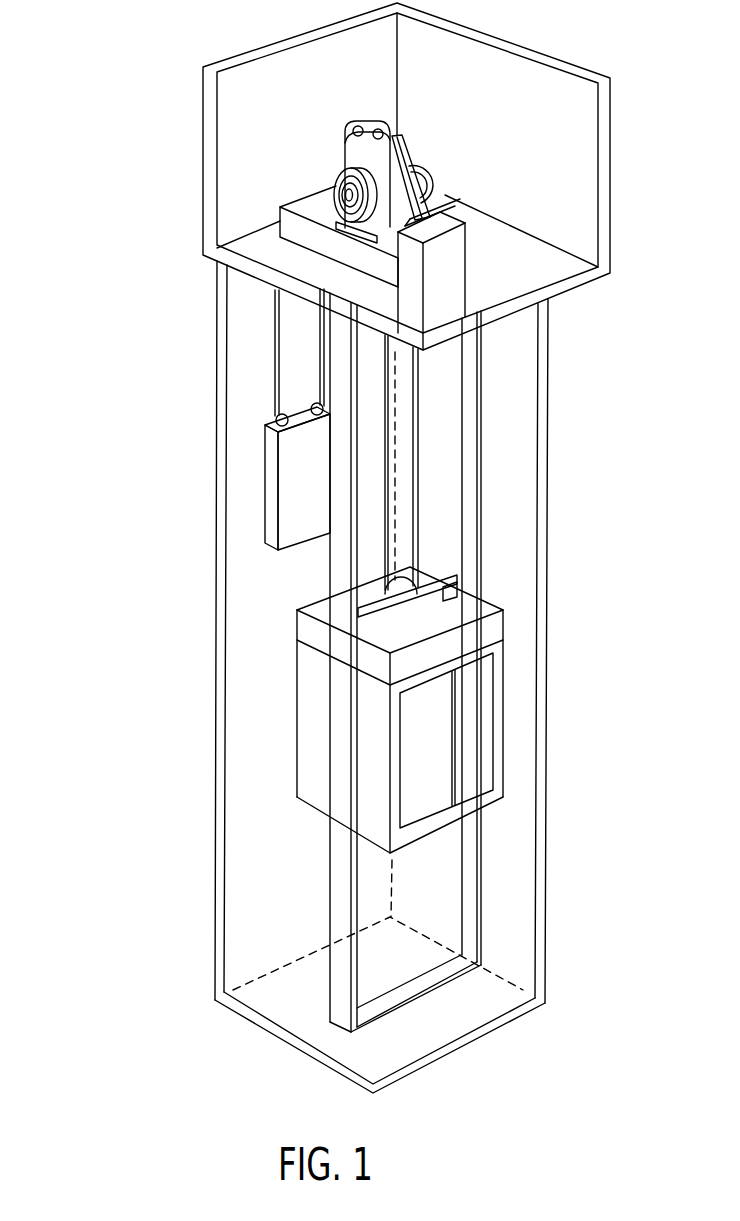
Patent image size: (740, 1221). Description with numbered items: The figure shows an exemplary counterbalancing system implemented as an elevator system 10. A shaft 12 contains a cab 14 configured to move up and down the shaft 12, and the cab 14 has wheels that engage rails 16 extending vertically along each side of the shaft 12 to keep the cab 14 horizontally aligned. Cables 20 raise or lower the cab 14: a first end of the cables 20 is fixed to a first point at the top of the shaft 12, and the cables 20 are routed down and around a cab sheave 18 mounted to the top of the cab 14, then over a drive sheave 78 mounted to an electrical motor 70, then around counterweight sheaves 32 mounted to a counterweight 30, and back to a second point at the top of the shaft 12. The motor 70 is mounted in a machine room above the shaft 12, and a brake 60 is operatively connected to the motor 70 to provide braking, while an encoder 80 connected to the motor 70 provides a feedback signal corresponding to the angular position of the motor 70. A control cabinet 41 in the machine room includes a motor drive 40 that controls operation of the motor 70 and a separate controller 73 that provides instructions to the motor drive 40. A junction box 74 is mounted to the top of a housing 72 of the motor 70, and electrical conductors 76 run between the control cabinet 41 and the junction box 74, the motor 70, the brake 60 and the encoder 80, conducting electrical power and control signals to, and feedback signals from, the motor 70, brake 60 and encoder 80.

The elevator system 10 is at (126, 204).
The shaft 12 is at (515, 568).
The cab 14 is at (480, 797).
The rails 16 is at (335, 915).
The cab sheave 18 is at (410, 604).
The cables 20 is at (413, 486).
The counterweight 30 is at (297, 545).
The counterweight sheaves 32 is at (283, 413).
The motor drive 40 is at (458, 208).
The control cabinet 41 is at (431, 291).
The brake 60 is at (431, 174).
The electrical motor 70 is at (331, 112).
The housing 72 is at (422, 165).
The controller 73 is at (482, 254).
The junction box 74 is at (358, 124).
The electrical conductors 76 is at (451, 210).
The drive sheave 78 is at (340, 172).
The encoder 80 is at (340, 192).